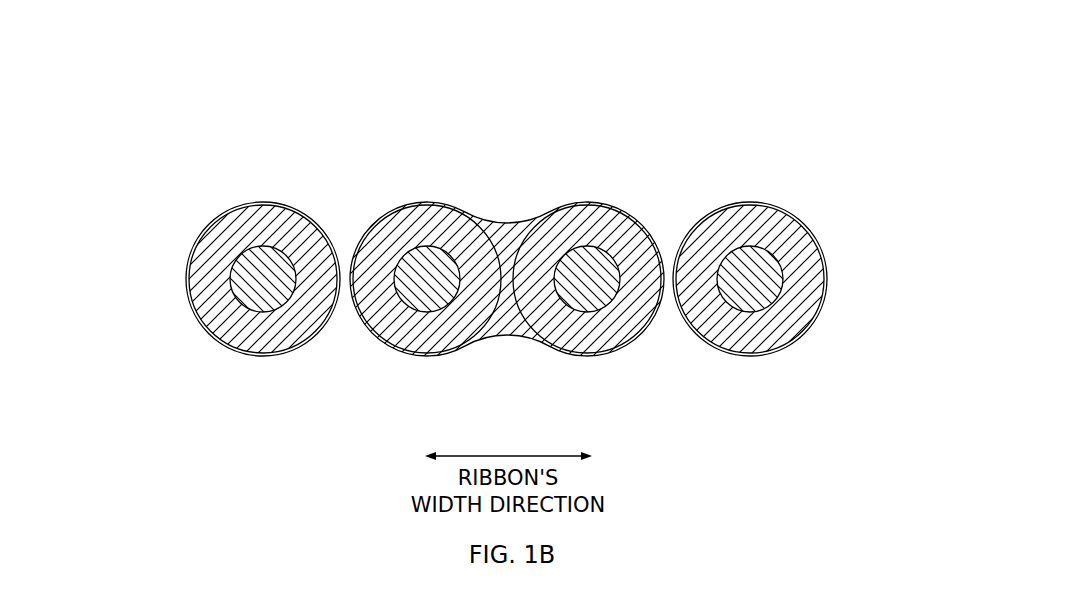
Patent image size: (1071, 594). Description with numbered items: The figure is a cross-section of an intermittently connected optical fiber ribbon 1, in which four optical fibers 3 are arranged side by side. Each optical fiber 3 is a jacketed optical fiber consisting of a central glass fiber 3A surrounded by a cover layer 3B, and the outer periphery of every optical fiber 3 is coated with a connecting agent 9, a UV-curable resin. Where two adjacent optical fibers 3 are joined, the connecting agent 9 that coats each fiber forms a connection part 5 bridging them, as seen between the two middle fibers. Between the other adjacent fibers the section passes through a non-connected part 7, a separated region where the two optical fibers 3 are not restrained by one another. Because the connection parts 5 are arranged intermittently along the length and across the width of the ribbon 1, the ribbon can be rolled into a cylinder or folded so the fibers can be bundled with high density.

The intermittently connected optical fiber ribbon 1 is at (384, 103).
The optical fiber 3 is at (245, 134).
The glass fiber 3A is at (260, 265).
The cover layer 3B is at (288, 227).
The connection part 5 is at (502, 227).
The non-connected part 7 is at (342, 227).
The connecting agent 9 is at (212, 222).